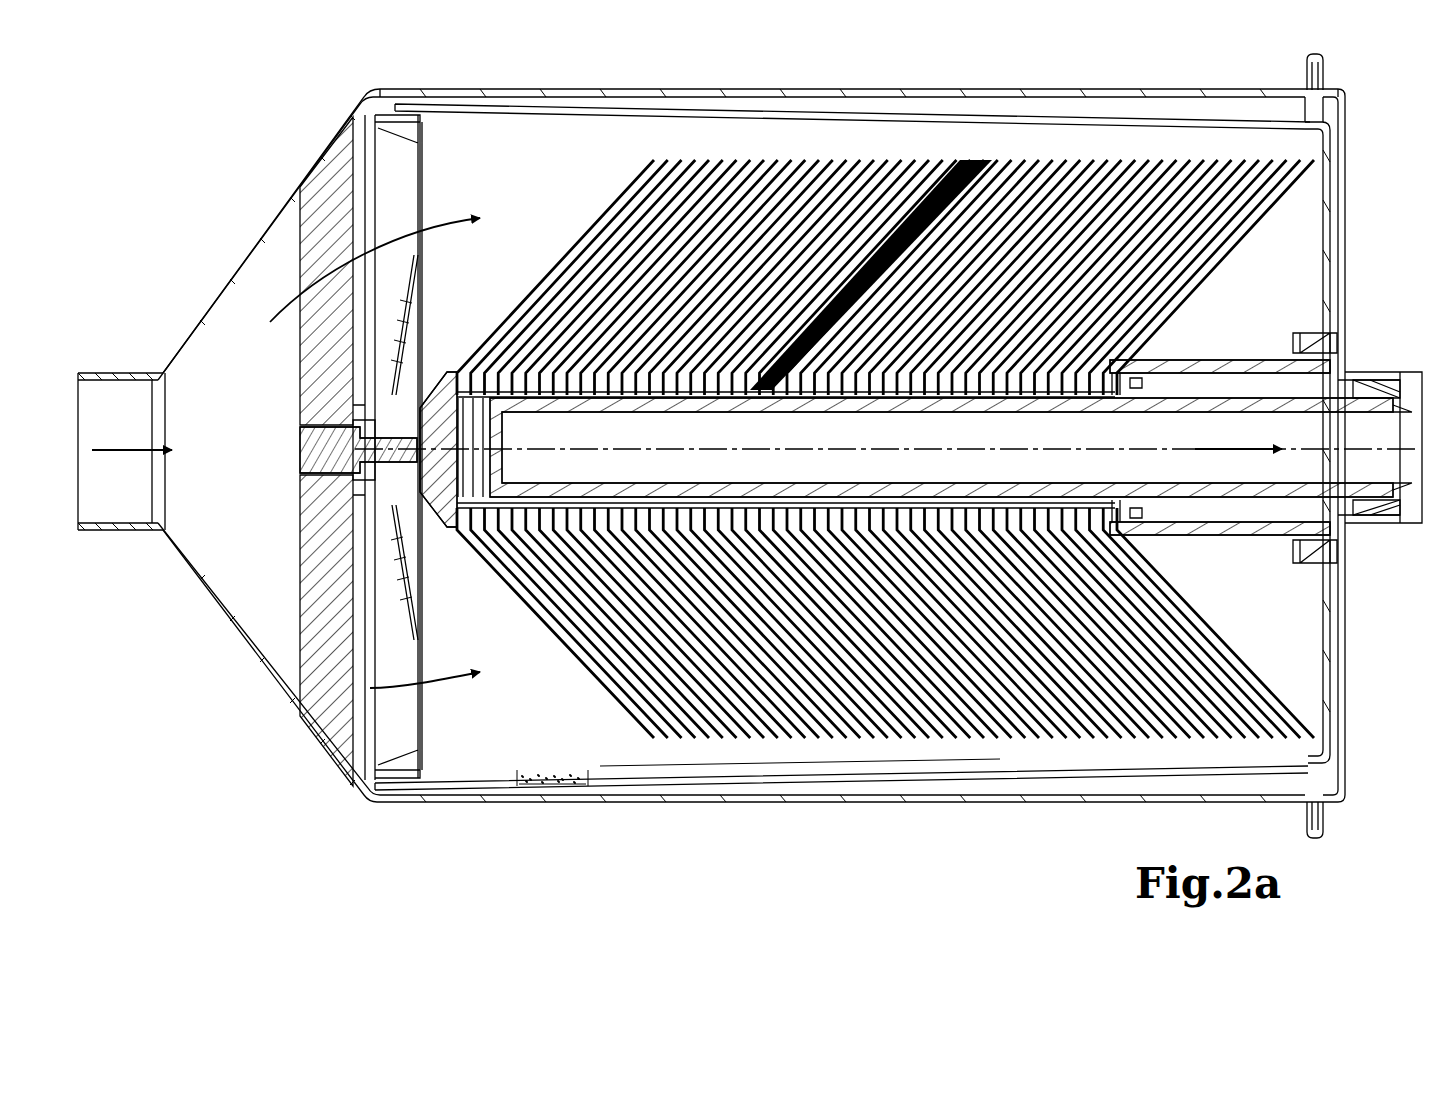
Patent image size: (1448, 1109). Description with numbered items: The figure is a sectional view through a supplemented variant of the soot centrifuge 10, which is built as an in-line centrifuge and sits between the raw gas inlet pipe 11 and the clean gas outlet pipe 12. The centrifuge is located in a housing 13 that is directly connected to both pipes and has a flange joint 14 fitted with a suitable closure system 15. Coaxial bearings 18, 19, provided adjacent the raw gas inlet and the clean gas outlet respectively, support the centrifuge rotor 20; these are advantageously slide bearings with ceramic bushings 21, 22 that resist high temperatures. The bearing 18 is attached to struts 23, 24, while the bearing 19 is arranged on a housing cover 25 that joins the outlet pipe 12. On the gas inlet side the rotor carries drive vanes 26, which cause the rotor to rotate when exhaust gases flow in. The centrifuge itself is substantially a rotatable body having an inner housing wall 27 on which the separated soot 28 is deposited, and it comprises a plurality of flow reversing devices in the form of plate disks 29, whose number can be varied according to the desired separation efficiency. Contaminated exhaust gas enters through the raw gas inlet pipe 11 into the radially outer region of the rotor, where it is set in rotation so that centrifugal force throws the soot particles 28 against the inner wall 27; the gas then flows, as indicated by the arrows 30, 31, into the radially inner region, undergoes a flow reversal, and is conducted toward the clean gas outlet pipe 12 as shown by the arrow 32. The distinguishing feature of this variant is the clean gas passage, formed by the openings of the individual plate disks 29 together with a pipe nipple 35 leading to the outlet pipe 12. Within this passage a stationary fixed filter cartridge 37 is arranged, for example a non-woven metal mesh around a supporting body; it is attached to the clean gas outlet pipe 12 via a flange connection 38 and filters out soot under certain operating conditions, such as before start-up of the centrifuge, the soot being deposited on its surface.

The soot centrifuge 10 is at (652, 832).
The raw gas inlet pipe 11 is at (123, 398).
The clean gas outlet pipe 12 is at (1412, 388).
The housing 13 is at (1040, 89).
The flange joint 14 is at (1320, 52).
The closure system 15 is at (1330, 78).
The bearing 18 is at (292, 470).
The bearing 19 is at (1334, 562).
The centrifuge rotor 20 is at (482, 784).
The ceramic bushing 21 is at (305, 430).
The ceramic bushing 22 is at (1332, 340).
The strut 23 is at (318, 572).
The strut 24 is at (318, 356).
The housing cover 25 is at (1346, 158).
The drive vanes 26 is at (400, 697).
The inner housing wall 27 is at (622, 783).
The separated soot 28 is at (554, 772).
The plate disks 29 is at (868, 156).
The arrow 30 is at (980, 154).
The arrow 31 is at (968, 724).
The arrow 32 is at (1230, 450).
The pipe nipple 35 is at (1232, 536).
The fixed filter cartridge 37 is at (1128, 402).
The flange connection 38 is at (1378, 512).